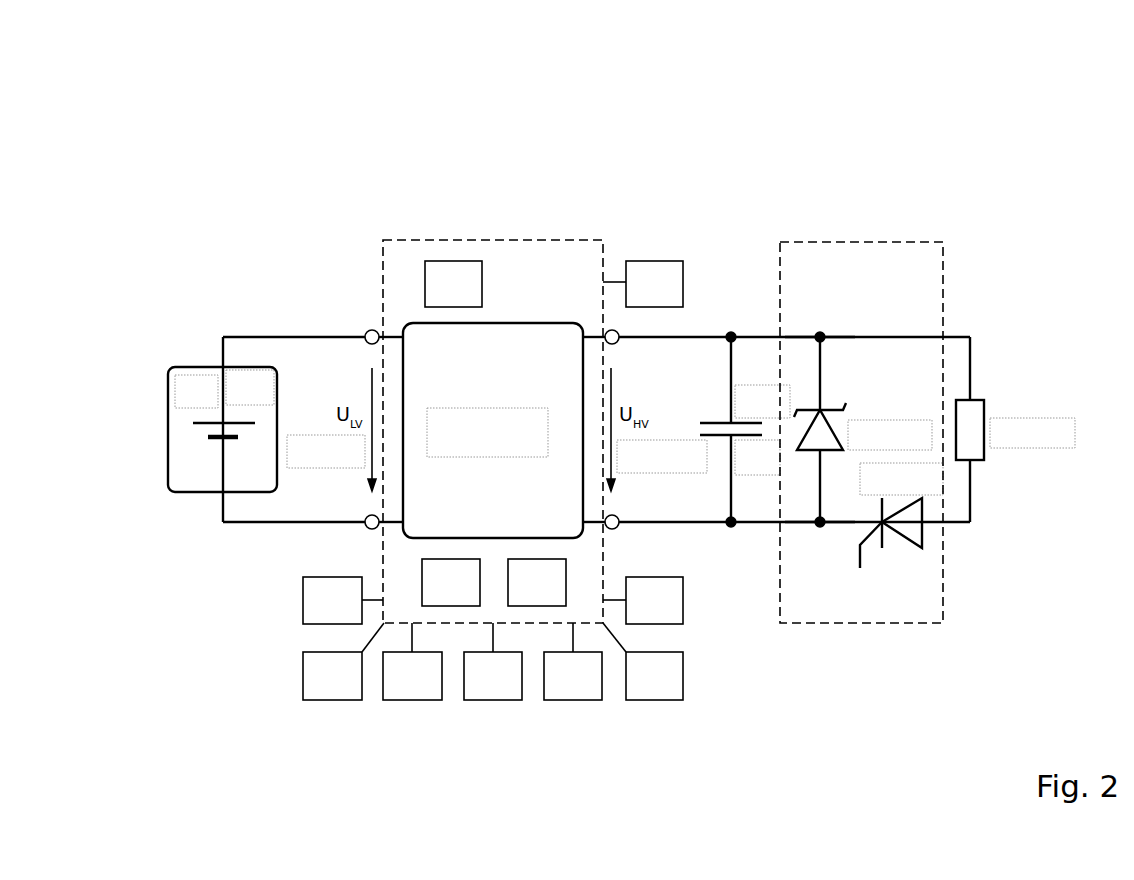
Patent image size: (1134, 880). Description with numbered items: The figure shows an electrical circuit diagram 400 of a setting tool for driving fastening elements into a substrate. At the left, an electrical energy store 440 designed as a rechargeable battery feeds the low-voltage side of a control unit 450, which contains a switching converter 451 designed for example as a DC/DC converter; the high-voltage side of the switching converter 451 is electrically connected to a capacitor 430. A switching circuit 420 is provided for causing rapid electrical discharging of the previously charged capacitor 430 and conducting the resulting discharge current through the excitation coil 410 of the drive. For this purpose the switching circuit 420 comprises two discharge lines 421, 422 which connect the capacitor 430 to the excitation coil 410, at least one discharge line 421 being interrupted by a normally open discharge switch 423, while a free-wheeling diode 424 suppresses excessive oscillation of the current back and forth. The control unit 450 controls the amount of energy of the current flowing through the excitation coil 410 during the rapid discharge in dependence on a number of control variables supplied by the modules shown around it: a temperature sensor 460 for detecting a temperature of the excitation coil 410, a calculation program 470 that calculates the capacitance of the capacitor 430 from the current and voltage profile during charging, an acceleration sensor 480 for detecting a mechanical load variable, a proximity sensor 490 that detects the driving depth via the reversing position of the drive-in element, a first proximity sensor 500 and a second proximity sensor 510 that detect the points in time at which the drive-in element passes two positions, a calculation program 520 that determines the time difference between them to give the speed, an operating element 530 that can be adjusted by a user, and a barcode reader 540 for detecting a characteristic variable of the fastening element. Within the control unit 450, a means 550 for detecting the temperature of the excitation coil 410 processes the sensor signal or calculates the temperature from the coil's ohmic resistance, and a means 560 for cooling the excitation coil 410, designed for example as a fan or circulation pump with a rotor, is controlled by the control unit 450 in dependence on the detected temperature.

The electrical circuit diagram 400 is at (158, 131).
The excitation coil 410 is at (970, 435).
The switching circuit 420 is at (945, 280).
The discharge line 421 is at (842, 520).
The discharge line 422 is at (797, 337).
The discharge switch 423 is at (923, 535).
The free-wheeling diode 424 is at (803, 437).
The capacitor 430 is at (718, 423).
The electrical energy store 440 is at (243, 368).
The control unit 450 is at (477, 240).
The switching converter 451 is at (533, 323).
The temperature sensor 460 is at (636, 611).
The calculation program 470 is at (519, 593).
The acceleration sensor 480 is at (636, 687).
The proximity sensor 490 is at (555, 687).
The first proximity sensor 500 is at (475, 687).
The second proximity sensor 510 is at (394, 687).
The calculation program 520 is at (433, 593).
The operating element 530 is at (314, 687).
The barcode reader 540 is at (314, 611).
The means for detecting a temperature of the excitation coil 550 is at (435, 295).
The means for cooling the excitation coil 560 is at (636, 295).